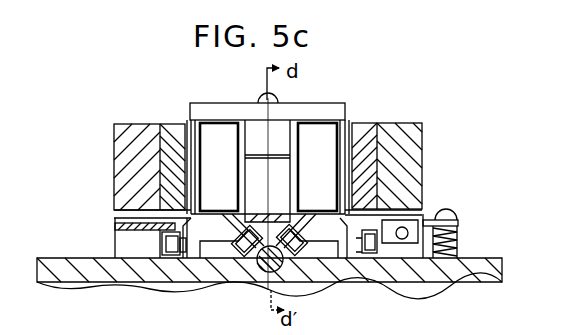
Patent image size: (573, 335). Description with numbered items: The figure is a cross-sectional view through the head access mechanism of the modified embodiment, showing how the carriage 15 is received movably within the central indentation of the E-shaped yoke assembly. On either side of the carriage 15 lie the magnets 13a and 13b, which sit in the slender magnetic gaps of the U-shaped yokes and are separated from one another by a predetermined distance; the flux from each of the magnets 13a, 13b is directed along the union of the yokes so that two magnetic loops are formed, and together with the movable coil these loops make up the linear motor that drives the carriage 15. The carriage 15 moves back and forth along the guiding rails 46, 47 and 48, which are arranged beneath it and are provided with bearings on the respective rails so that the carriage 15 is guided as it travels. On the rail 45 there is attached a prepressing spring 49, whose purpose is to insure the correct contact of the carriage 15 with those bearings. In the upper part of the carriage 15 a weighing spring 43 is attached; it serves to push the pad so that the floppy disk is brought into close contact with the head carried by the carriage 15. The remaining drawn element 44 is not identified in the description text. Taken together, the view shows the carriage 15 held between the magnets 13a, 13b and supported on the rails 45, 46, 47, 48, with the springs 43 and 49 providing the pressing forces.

The carriage 15 is at (252, 128).
The magnet 13a is at (375, 160).
The magnet 13b is at (165, 167).
The weighing spring 43 is at (132, 231).
The bracket 44 is at (248, 259).
The rail 45 is at (392, 245).
The guiding rail 46 is at (170, 256).
The guiding rail 47 is at (285, 262).
The guiding rail 48 is at (372, 255).
The prepressing spring 49 is at (460, 236).